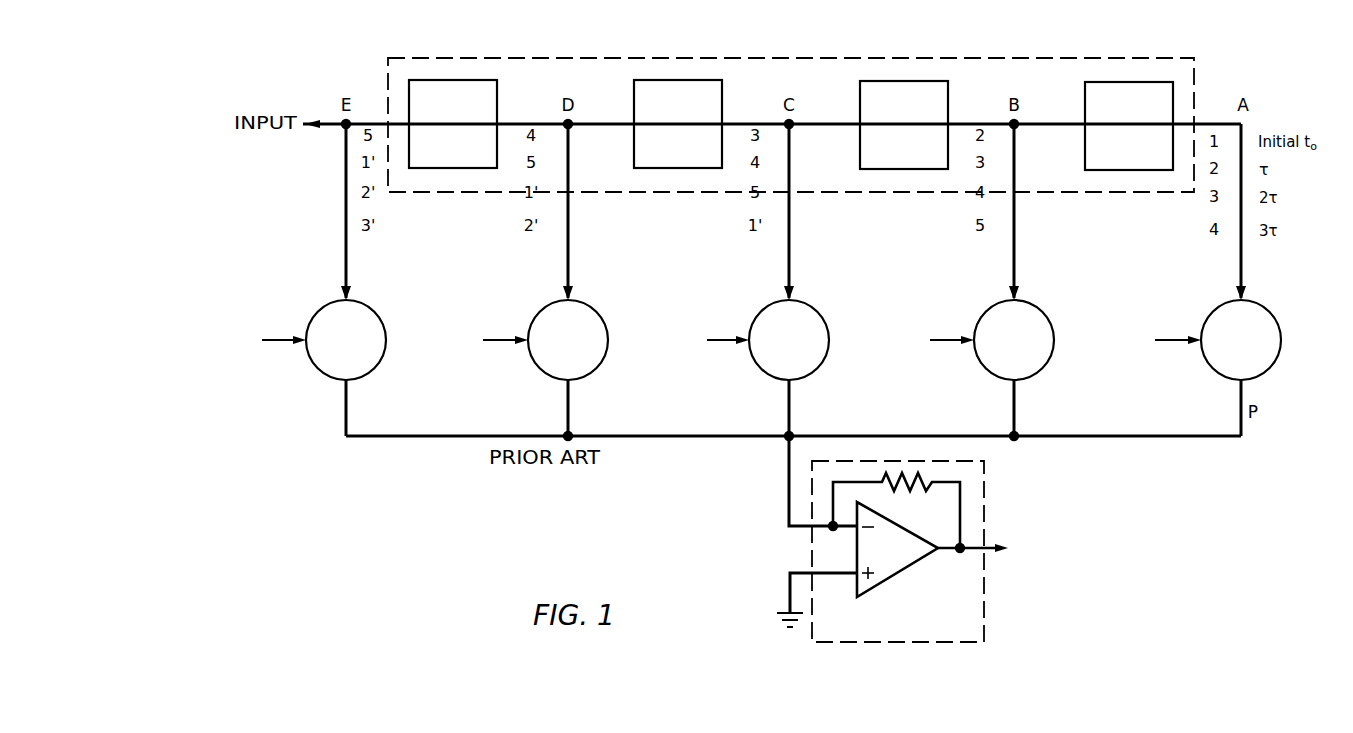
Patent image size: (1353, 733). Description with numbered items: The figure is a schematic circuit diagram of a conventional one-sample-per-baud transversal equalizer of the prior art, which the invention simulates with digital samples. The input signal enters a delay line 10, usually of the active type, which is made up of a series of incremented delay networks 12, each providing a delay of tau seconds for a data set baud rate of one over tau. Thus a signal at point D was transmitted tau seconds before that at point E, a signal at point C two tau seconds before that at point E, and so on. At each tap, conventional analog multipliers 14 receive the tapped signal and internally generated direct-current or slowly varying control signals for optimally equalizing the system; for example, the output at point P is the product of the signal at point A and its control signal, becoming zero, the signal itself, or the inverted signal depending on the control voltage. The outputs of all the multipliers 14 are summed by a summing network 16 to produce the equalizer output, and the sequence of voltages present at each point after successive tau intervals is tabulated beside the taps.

The delay line 10 is at (795, 58).
The delay network 12 is at (459, 79).
The analog multiplier 14 is at (372, 369).
The summing network 16 is at (948, 645).